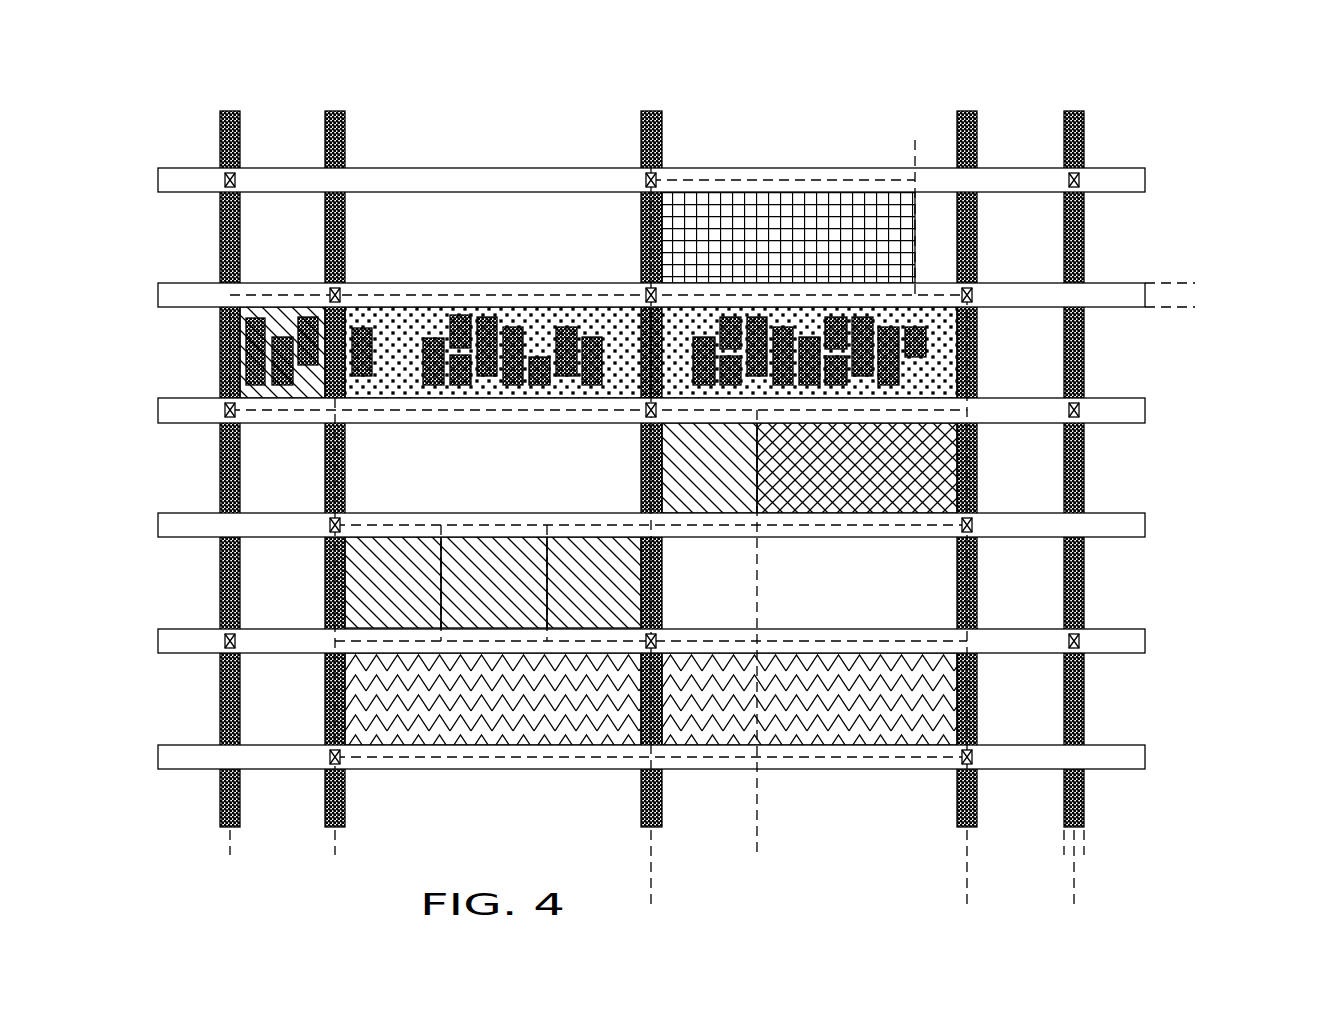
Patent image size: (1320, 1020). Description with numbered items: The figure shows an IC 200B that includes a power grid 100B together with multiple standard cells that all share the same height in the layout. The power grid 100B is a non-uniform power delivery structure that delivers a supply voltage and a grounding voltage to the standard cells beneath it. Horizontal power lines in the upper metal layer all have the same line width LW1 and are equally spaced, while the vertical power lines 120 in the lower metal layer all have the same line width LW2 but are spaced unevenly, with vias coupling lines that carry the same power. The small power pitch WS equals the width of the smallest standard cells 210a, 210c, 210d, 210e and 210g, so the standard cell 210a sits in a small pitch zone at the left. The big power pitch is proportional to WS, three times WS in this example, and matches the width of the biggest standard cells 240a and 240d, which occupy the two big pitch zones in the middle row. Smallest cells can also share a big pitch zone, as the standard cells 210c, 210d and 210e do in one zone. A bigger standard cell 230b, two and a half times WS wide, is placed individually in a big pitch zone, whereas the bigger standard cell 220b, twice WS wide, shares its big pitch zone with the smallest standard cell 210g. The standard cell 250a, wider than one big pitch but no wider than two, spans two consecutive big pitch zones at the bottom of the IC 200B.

The power grid 100B is at (1115, 86).
The IC 200B is at (1298, 896).
The power lines 120 is at (283, 388).
The standard cell 210a is at (281, 295).
The standard cell 210c is at (424, 601).
The standard cell 210d is at (524, 601).
The standard cell 210e is at (627, 601).
The standard cell 210g is at (739, 481).
The standard cell 220b is at (890, 481).
The standard cell 230b is at (823, 258).
The standard cell 240a is at (495, 295).
The standard cell 240d is at (967, 380).
The standard cell 250a is at (820, 645).
The power pitch WS is at (915, 147).
The line width LW1 is at (1187, 245).
The line width LW2 is at (1020, 849).